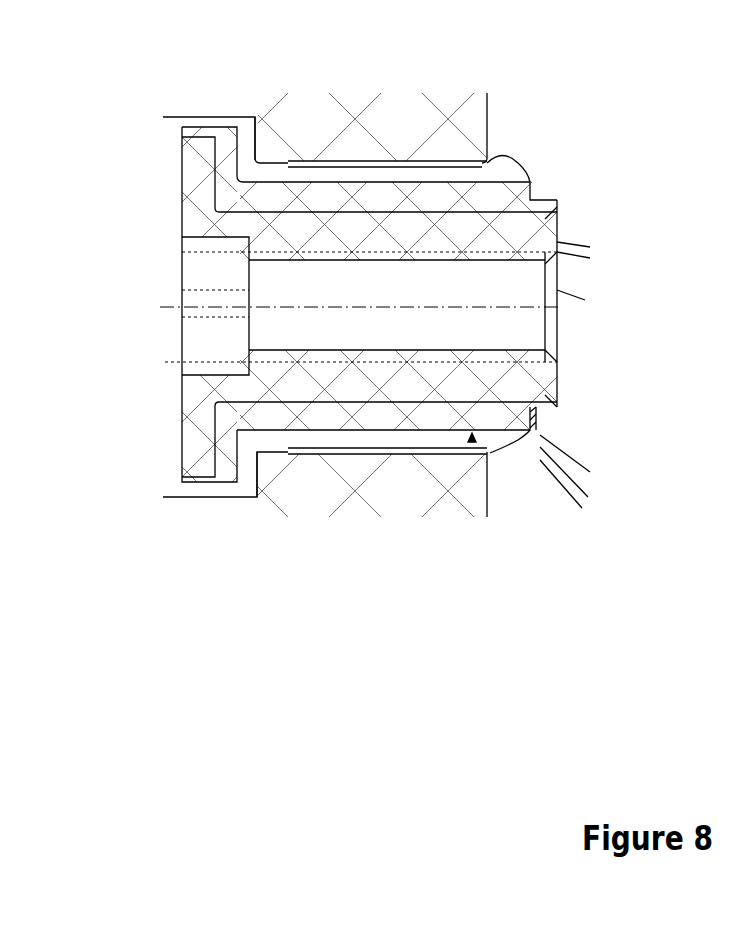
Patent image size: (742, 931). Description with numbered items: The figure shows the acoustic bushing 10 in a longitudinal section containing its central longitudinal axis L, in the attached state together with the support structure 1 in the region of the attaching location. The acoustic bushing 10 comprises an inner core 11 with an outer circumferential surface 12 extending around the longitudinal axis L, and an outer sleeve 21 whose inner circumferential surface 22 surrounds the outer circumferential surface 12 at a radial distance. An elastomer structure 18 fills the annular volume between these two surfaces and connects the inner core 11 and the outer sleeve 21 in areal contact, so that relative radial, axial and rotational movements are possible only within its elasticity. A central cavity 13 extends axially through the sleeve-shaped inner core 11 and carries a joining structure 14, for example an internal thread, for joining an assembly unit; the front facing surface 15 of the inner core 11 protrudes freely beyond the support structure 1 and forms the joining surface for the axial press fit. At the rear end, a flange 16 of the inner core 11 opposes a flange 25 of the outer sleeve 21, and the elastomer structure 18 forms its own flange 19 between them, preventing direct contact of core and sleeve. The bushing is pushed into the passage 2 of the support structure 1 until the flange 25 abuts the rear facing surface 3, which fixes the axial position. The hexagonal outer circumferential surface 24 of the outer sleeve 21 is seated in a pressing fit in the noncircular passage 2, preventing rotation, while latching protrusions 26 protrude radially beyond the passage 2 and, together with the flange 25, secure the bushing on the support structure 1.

The support structure 1 is at (362, 125).
The passage 2 is at (422, 160).
The rear facing surface 3 is at (263, 137).
The acoustic bushing 10 is at (160, 165).
The inner core 11 is at (306, 390).
The outer circumferential surface 12 is at (475, 400).
The central cavity 13 is at (395, 300).
The joining structure 14 is at (447, 260).
The front facing surface 15 is at (558, 226).
The flange 16 is at (190, 452).
The elastomer structure 18 is at (432, 422).
The flange 19 is at (237, 458).
The outer sleeve 21 is at (353, 432).
The inner circumferential surface 22 is at (490, 470).
The outer circumferential surface 24 is at (510, 171).
The flange 25 is at (237, 478).
The latching protrusions 26 is at (513, 163).
The longitudinal axis L is at (164, 306).